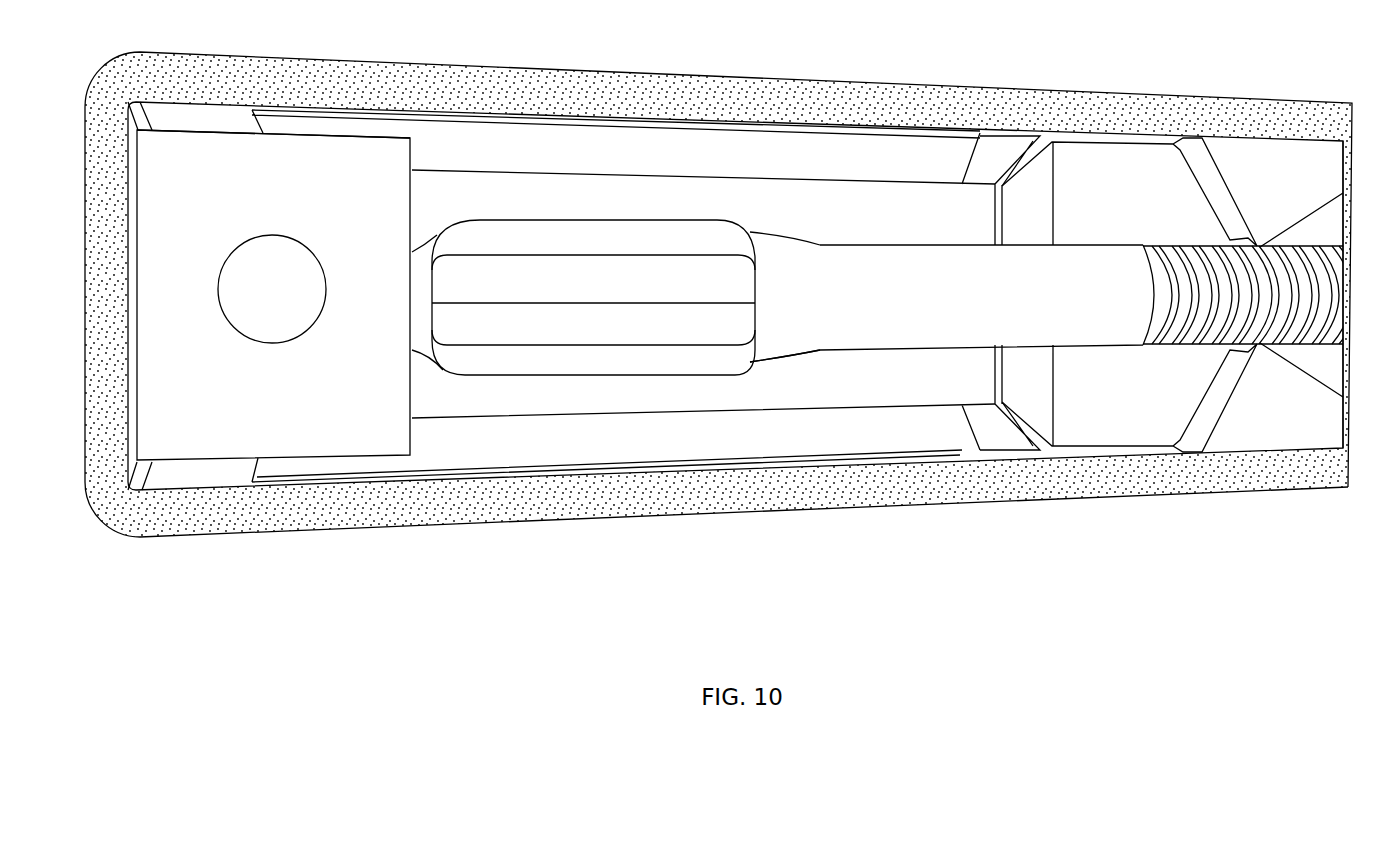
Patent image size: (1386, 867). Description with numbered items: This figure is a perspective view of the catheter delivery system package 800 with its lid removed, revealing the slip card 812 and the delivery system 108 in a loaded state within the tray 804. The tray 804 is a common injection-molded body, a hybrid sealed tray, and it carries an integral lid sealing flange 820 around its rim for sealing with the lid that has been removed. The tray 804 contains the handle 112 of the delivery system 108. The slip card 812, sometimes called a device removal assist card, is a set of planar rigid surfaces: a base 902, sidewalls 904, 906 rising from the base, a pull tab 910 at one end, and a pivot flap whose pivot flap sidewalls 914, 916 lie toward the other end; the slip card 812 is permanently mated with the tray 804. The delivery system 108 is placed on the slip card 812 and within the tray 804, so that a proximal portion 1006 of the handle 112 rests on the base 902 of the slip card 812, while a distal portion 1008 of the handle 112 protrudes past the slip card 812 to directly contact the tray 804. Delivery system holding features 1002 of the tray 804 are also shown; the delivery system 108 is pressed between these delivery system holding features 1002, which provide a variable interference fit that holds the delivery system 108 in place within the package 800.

The catheter delivery system package 800 is at (408, 537).
The tray 804 is at (667, 523).
The slip card 812 is at (360, 138).
The lid sealing flange 820 is at (507, 493).
The base 902 is at (856, 240).
The sidewall 904 is at (807, 447).
The sidewall 906 is at (636, 164).
The pull tab 910 is at (216, 404).
The pivot flap sidewall 914 is at (982, 425).
The pivot flap sidewall 916 is at (990, 167).
The delivery system holding features 1002 is at (1262, 160).
The proximal portion 1006 is at (567, 218).
The distal portion 1008 is at (1100, 230).
The delivery system 108 is at (770, 250).
The handle 112 is at (767, 358).